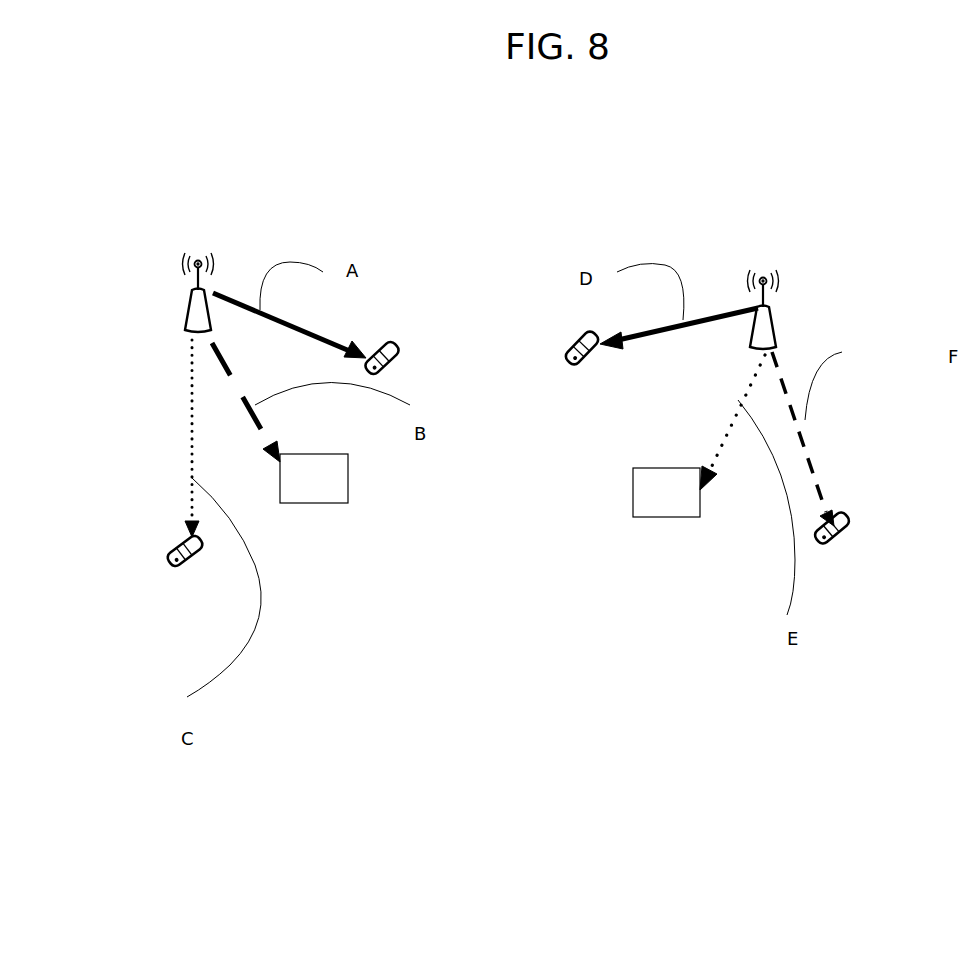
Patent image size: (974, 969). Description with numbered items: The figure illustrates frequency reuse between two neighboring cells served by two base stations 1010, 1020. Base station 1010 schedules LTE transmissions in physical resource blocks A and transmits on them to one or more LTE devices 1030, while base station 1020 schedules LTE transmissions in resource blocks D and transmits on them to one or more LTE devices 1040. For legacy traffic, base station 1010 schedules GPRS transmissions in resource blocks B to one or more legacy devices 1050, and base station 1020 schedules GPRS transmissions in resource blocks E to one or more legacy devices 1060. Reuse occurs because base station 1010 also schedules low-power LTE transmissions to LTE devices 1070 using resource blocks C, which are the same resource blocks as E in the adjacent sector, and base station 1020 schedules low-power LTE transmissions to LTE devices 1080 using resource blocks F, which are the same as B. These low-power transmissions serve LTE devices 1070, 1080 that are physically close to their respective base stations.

The base station 1010 is at (201, 290).
The base station 1020 is at (767, 303).
The LTE devices 1030 is at (397, 340).
The LTE devices 1040 is at (570, 358).
The legacy devices 1050 is at (348, 503).
The legacy devices 1060 is at (633, 517).
The LTE devices 1070 is at (168, 552).
The LTE devices 1080 is at (838, 540).